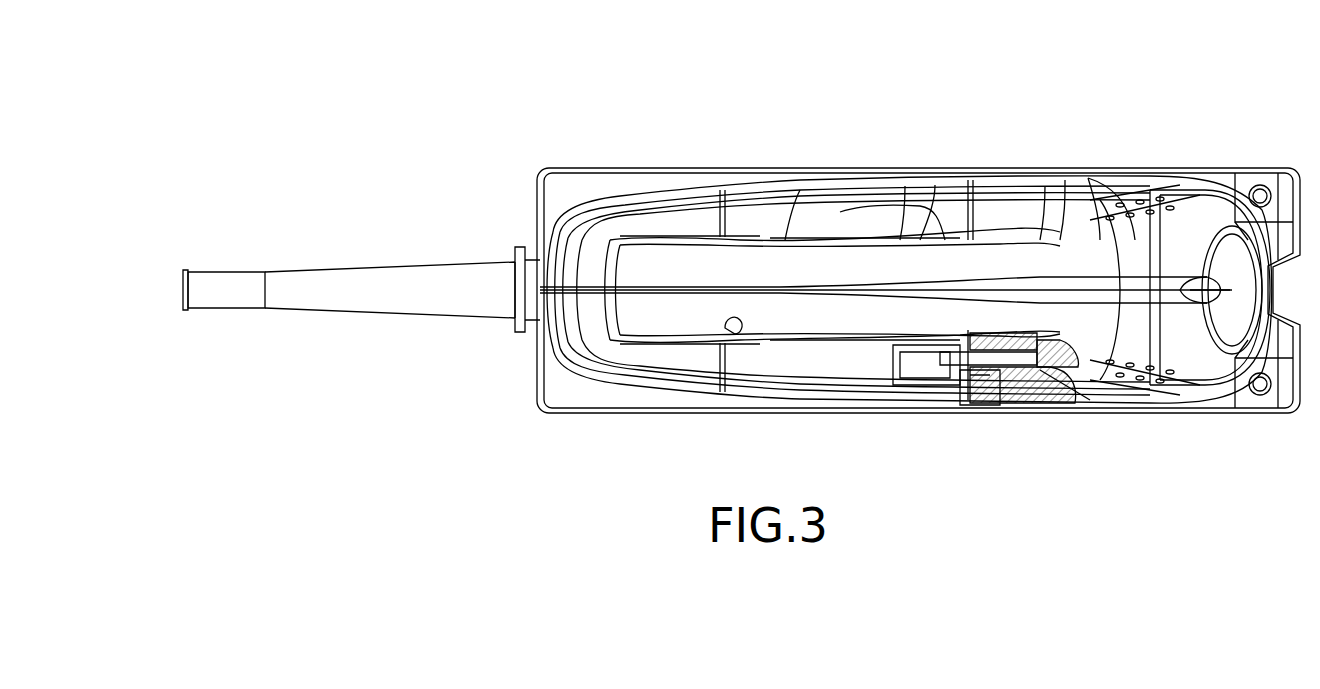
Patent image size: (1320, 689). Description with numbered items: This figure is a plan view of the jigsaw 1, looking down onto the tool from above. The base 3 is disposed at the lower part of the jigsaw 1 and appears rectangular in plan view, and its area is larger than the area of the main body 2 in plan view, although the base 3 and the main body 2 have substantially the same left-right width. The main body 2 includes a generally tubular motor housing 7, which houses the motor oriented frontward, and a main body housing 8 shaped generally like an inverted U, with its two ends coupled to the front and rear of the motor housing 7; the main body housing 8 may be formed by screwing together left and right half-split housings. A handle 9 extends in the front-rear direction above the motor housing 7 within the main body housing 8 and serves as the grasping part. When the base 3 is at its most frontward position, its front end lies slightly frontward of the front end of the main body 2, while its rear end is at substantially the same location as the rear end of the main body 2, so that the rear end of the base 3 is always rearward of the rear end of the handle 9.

The jigsaw 1 is at (1173, 120).
The main body 2 is at (1064, 172).
The base 3 is at (665, 182).
The motor housing 7 is at (774, 210).
The main body housing 8 is at (1238, 212).
The handle 9 is at (823, 263).